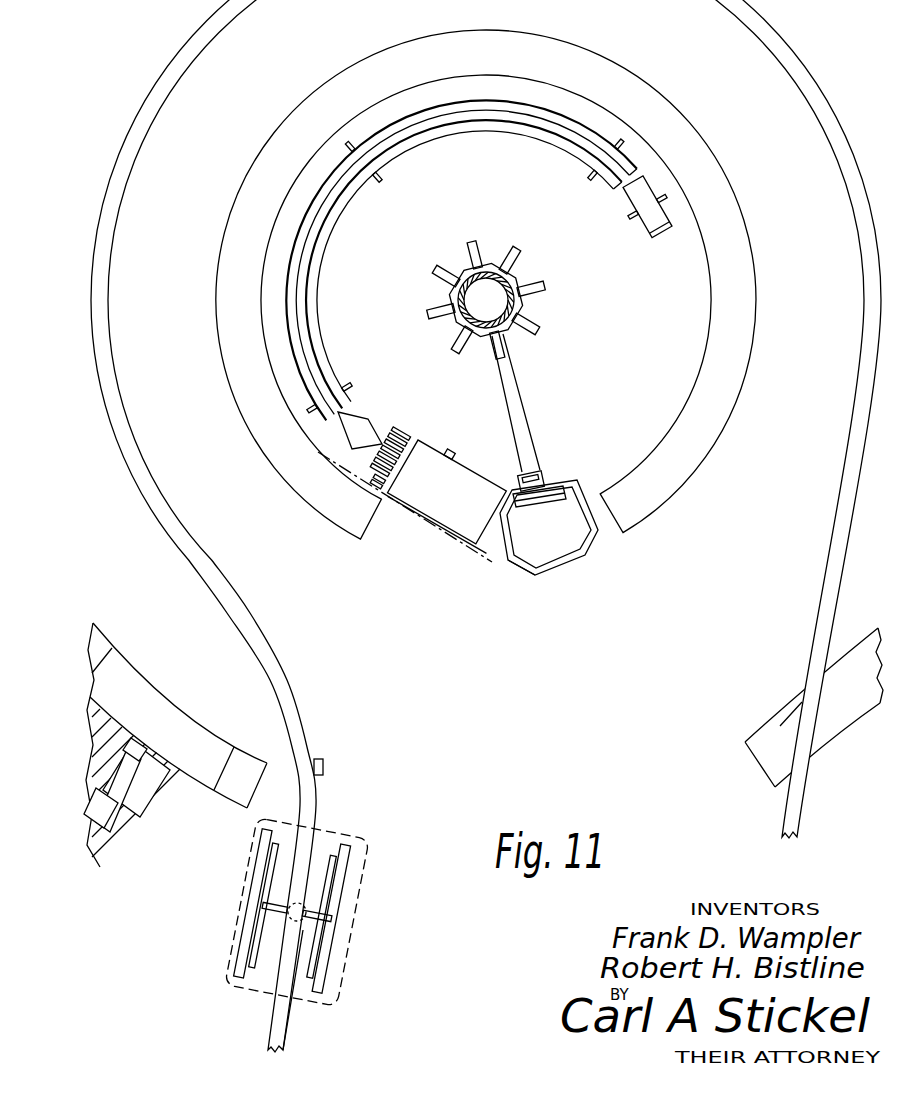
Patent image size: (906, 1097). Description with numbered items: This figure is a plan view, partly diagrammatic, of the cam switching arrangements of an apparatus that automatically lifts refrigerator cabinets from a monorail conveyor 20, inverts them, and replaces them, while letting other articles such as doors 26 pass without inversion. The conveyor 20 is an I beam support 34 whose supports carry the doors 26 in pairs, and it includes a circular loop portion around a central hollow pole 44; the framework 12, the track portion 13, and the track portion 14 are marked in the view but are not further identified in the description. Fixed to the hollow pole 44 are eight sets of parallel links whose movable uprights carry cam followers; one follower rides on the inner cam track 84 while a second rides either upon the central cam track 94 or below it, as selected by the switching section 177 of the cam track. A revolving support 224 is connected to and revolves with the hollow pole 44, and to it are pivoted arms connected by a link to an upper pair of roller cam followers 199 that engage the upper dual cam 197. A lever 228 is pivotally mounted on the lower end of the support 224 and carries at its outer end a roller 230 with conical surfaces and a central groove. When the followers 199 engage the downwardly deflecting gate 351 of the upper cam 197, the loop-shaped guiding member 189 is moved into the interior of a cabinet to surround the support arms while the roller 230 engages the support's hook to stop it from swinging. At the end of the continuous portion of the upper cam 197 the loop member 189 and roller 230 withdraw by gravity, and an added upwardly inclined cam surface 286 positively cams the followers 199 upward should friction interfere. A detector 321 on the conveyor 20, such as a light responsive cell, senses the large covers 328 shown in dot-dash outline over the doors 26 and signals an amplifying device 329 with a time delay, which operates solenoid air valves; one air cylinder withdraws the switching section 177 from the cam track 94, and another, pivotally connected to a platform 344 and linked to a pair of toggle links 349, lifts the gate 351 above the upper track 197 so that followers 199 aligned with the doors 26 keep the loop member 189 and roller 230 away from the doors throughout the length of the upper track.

The frame 12 is at (312, 441).
The track section 13 is at (845, 842).
The track section 14 is at (187, 687).
The monorail conveyor 20 is at (268, 1031).
The doors 26 is at (255, 919).
The I beam support 34 is at (284, 1018).
The hollow pole 44 is at (520, 301).
The inner cam track 84 is at (222, 357).
The central cam track 94 is at (100, 643).
The switching section 177 is at (205, 735).
The loop-shaped guiding member 189 is at (545, 568).
The upper dual cam 197 is at (318, 342).
The roller cam followers 199 is at (548, 470).
The revolving support 224 is at (512, 250).
The lever 228 is at (566, 480).
The roller 230 is at (536, 507).
The upwardly inclined cam surface 286 is at (647, 213).
The detector 321 is at (324, 767).
The covers 328 is at (228, 972).
The amplifying device 329 is at (122, 823).
The platform 344 is at (480, 488).
The toggle links 349 is at (385, 443).
The gate 351 is at (365, 430).